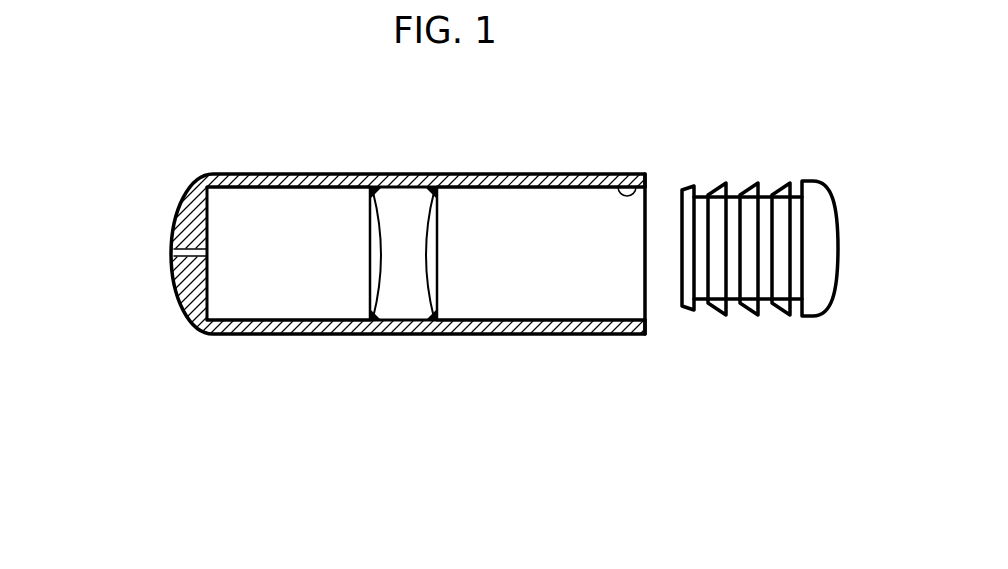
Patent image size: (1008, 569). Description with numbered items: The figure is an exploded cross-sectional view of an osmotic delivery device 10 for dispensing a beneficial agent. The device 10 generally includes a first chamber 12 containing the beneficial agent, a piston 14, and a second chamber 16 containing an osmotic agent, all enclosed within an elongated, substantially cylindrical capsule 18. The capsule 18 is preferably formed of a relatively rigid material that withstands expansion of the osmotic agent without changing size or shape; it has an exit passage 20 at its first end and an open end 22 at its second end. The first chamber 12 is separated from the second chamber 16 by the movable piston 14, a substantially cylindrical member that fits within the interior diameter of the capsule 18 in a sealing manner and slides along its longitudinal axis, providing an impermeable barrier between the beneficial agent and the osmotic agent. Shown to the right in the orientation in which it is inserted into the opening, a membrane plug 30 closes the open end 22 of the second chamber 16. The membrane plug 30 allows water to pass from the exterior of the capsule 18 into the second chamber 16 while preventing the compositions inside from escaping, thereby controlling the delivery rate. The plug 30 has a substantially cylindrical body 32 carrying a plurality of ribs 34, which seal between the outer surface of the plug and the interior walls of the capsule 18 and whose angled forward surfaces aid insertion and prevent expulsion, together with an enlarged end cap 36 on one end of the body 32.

The osmotic delivery device 10 is at (584, 120).
The first chamber 12 is at (297, 264).
The piston 14 is at (417, 264).
The second chamber 16 is at (550, 264).
The capsule 18 is at (312, 348).
The exit passage 20 is at (178, 297).
The open end 22 is at (645, 180).
The membrane plug 30 is at (733, 350).
The cylindrical body 32 is at (735, 210).
The ribs 34 is at (714, 312).
The end cap 36 is at (820, 302).